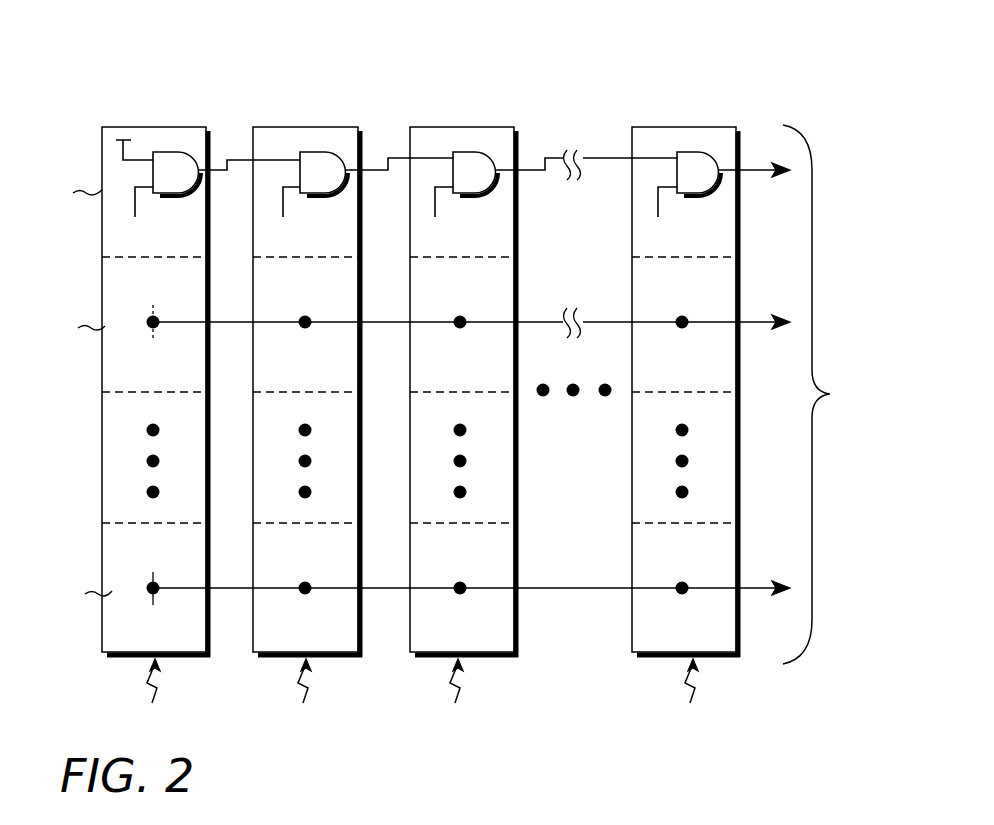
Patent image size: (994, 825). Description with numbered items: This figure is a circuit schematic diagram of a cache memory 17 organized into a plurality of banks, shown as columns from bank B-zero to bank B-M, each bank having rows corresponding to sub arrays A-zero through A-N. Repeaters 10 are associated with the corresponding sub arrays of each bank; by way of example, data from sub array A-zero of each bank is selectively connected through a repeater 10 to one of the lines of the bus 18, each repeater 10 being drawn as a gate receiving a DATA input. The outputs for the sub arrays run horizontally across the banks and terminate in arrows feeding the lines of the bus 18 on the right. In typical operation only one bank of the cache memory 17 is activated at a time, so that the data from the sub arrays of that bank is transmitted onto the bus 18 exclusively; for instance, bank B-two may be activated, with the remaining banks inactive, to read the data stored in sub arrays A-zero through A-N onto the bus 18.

The repeater 10 is at (164, 165).
The cache memory 17 is at (628, 96).
The bus 18 is at (514, 394).